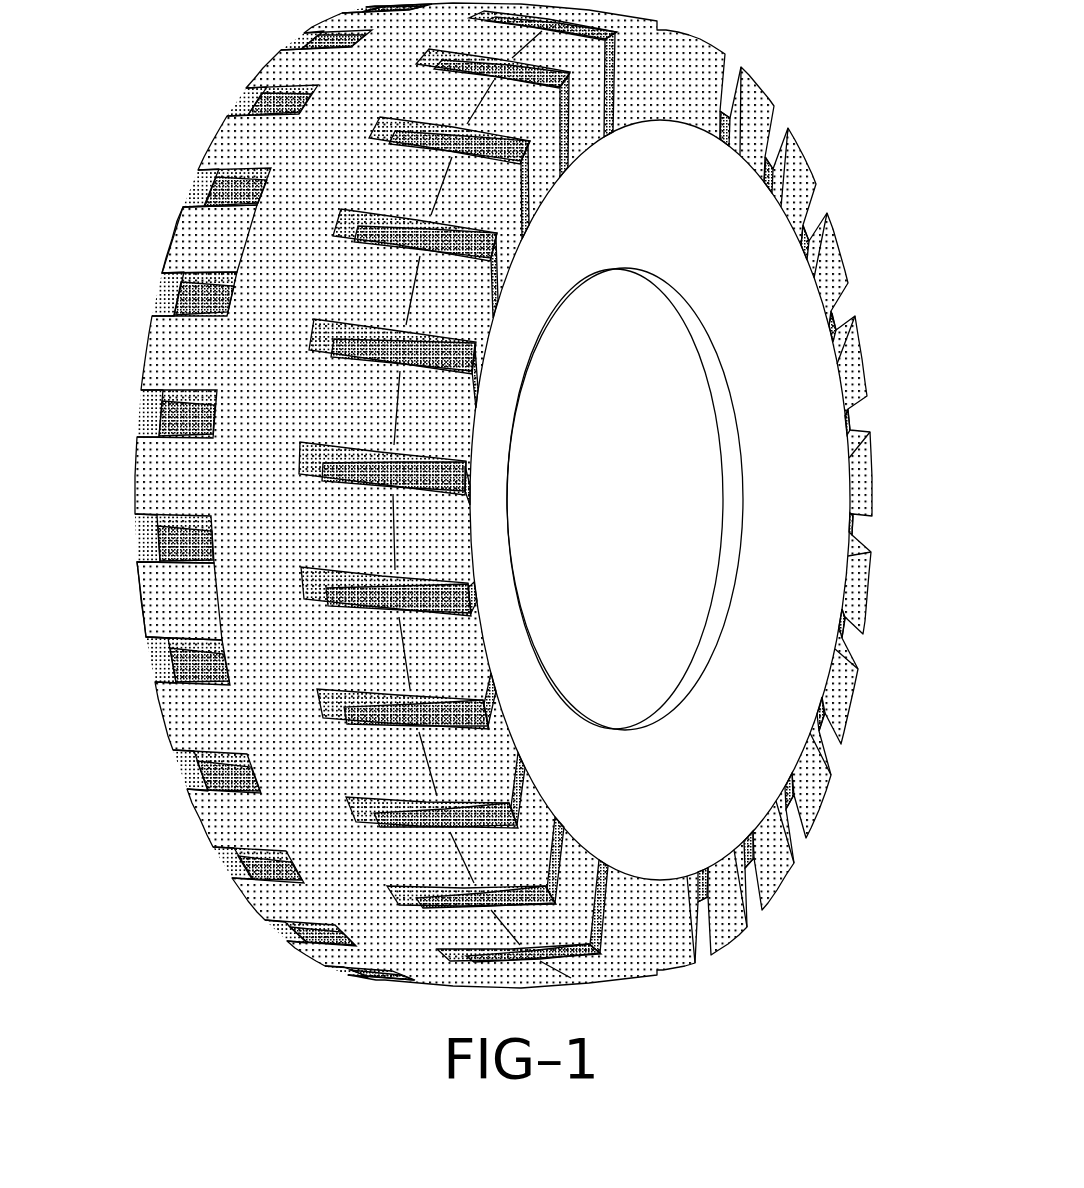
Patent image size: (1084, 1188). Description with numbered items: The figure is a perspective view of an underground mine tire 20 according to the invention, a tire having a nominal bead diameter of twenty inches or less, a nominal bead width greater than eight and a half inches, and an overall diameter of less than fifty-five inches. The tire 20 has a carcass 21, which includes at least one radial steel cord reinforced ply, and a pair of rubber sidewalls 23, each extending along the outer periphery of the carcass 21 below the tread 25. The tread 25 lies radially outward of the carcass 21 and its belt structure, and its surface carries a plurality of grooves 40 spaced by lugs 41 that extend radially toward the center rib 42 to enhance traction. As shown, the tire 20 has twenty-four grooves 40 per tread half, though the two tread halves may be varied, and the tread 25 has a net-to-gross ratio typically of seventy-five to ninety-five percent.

The underground mine tire 20 is at (492, 495).
The carcass 21 is at (565, 760).
The rubber sidewall 23 is at (750, 737).
The tread 25 is at (170, 605).
The groove 40 is at (180, 427).
The lug 41 is at (205, 242).
The center rib 42 is at (265, 387).